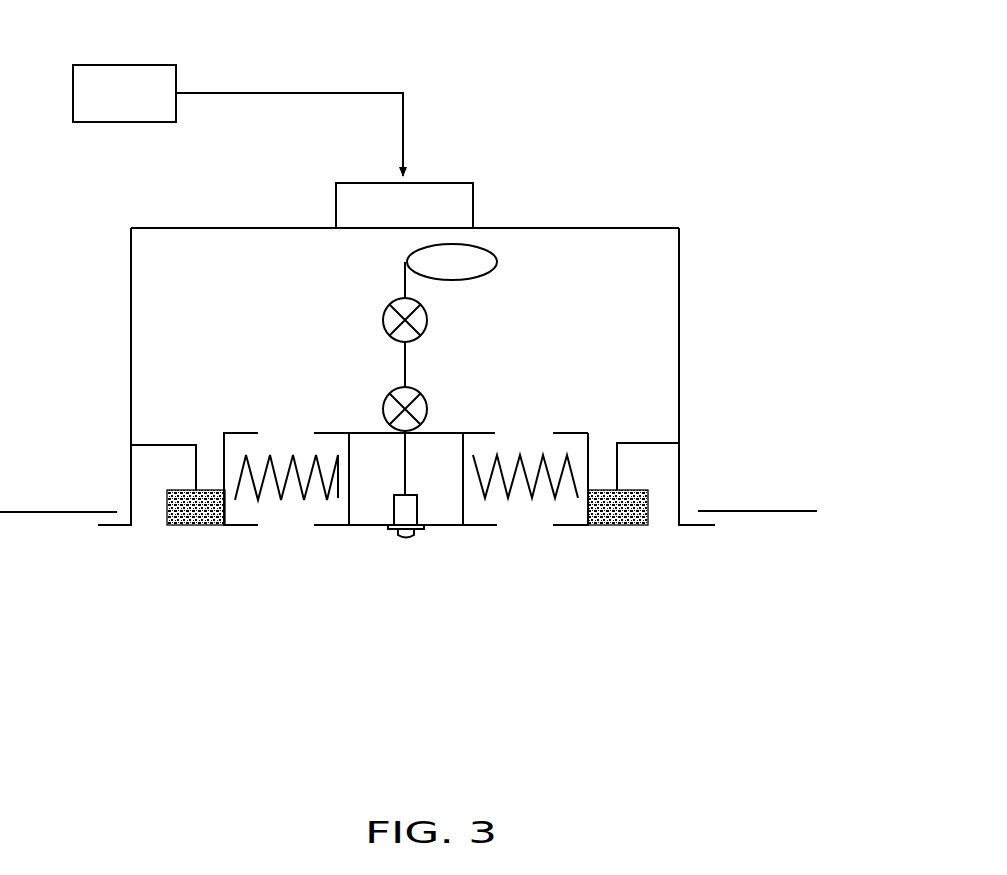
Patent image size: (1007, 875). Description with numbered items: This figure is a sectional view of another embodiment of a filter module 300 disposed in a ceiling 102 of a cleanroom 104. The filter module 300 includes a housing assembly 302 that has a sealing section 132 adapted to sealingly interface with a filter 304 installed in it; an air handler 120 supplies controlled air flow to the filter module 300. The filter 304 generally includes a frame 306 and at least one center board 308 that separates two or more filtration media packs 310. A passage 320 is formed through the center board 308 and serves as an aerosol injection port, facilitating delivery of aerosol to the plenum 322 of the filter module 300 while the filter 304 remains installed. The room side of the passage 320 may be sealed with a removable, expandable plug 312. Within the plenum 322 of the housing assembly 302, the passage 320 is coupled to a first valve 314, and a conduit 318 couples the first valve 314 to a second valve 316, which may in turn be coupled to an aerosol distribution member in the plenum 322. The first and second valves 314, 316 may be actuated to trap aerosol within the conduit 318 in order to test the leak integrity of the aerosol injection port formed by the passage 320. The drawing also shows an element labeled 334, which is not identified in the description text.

The ceiling 102 is at (780, 512).
The cleanroom 104 is at (688, 634).
The air handler 120 is at (147, 108).
The sealing section 132 is at (185, 438).
The filter module 300 is at (672, 193).
The housing assembly 302 is at (687, 316).
The filter 304 is at (252, 536).
The frame 306 is at (250, 432).
The center board 308 is at (492, 432).
The filtration media packs 310 is at (287, 517).
The plug 312 is at (418, 532).
The first valve 314 is at (433, 378).
The second valve 316 is at (386, 307).
The conduit 318 is at (404, 356).
The passage 320 is at (373, 500).
The plenum 322 is at (652, 375).
The reservoir 334 is at (497, 260).